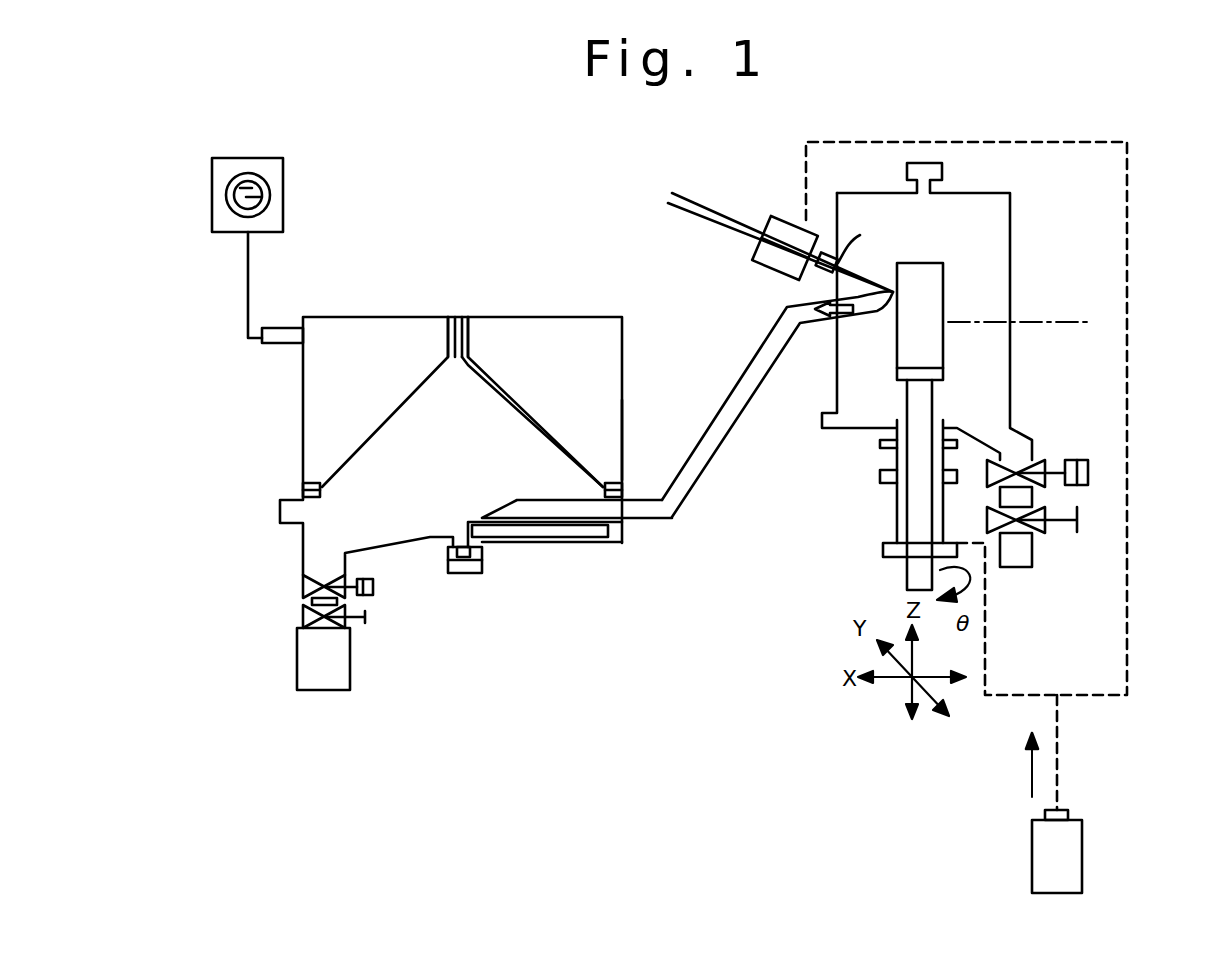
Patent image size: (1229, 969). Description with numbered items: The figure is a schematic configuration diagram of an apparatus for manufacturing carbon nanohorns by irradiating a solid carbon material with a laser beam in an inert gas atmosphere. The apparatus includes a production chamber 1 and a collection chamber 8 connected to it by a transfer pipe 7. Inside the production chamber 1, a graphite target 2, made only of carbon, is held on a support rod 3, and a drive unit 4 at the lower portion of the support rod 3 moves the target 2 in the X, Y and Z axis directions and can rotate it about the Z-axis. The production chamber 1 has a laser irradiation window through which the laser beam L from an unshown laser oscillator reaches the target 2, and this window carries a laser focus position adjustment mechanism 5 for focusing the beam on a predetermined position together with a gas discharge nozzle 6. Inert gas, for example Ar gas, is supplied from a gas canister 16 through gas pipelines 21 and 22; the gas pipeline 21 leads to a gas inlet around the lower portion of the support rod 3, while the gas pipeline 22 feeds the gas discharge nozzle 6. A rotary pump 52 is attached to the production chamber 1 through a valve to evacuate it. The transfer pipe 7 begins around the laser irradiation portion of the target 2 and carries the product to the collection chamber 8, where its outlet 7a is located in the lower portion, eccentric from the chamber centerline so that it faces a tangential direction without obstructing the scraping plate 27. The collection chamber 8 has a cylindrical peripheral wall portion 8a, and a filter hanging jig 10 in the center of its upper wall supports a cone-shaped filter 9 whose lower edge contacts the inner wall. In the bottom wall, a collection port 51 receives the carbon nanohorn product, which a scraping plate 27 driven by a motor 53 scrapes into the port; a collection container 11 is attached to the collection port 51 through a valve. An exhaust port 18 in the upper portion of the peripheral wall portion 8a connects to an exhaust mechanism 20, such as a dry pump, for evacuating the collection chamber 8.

The production chamber 1 is at (1000, 232).
The graphite target 2 is at (923, 318).
The support rod 3 is at (900, 477).
The drive unit 4 is at (907, 585).
The laser focus position adjustment mechanism 5 is at (763, 220).
The gas discharge nozzle 6 is at (860, 235).
The transfer pipe 7 is at (668, 502).
The collection chamber side end (outlet) 7a is at (508, 500).
The collection chamber 8 is at (545, 296).
The cylindrical peripheral wall portion 8a is at (623, 443).
The filter 9 is at (540, 425).
The filter hanging jig 10 is at (462, 330).
The collection container 11 is at (340, 657).
The gas canister 16 is at (1030, 860).
The exhaust port 18 is at (278, 327).
The exhaust mechanism 20 is at (248, 158).
The gas pipeline 21 is at (1100, 697).
The gas pipeline 22 is at (1127, 263).
The scraping plate 27 is at (576, 527).
The collection port 51 is at (322, 566).
The rotary pump 52 is at (1037, 563).
The motor 53 is at (485, 557).